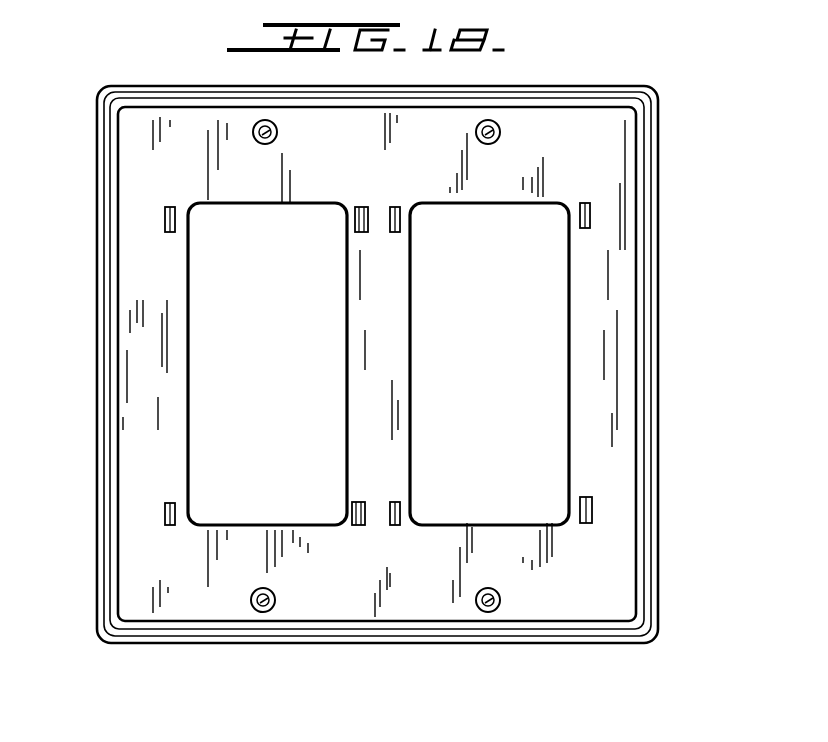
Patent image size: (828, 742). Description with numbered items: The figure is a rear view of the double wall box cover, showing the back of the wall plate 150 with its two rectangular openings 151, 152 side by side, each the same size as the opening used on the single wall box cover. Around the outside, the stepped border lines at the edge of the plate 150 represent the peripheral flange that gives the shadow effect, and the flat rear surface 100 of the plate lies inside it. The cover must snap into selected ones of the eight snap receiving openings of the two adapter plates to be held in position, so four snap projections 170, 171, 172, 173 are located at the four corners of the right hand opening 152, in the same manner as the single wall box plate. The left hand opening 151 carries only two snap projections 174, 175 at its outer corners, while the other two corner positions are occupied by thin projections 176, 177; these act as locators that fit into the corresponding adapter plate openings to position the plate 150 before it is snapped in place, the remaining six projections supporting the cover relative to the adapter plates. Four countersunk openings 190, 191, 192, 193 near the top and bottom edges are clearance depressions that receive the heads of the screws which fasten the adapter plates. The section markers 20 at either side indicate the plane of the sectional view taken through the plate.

The wall plate 150 is at (657, 79).
The plate body front face 100 is at (632, 447).
The opening 151 is at (195, 384).
The opening 152 is at (553, 345).
The snap projection 170 is at (397, 207).
The snap projection 171 is at (397, 527).
The snap projection 172 is at (586, 203).
The snap projection 173 is at (584, 525).
The snap projection 174 is at (168, 207).
The snap projection 175 is at (171, 527).
The thin projection 176 is at (361, 207).
The thin projection 177 is at (357, 527).
The countersunk opening 190 is at (278, 132).
The countersunk opening 191 is at (276, 600).
The countersunk opening 192 is at (501, 132).
The countersunk opening 193 is at (501, 598).
The section line 20- 20 is at (73, 218).